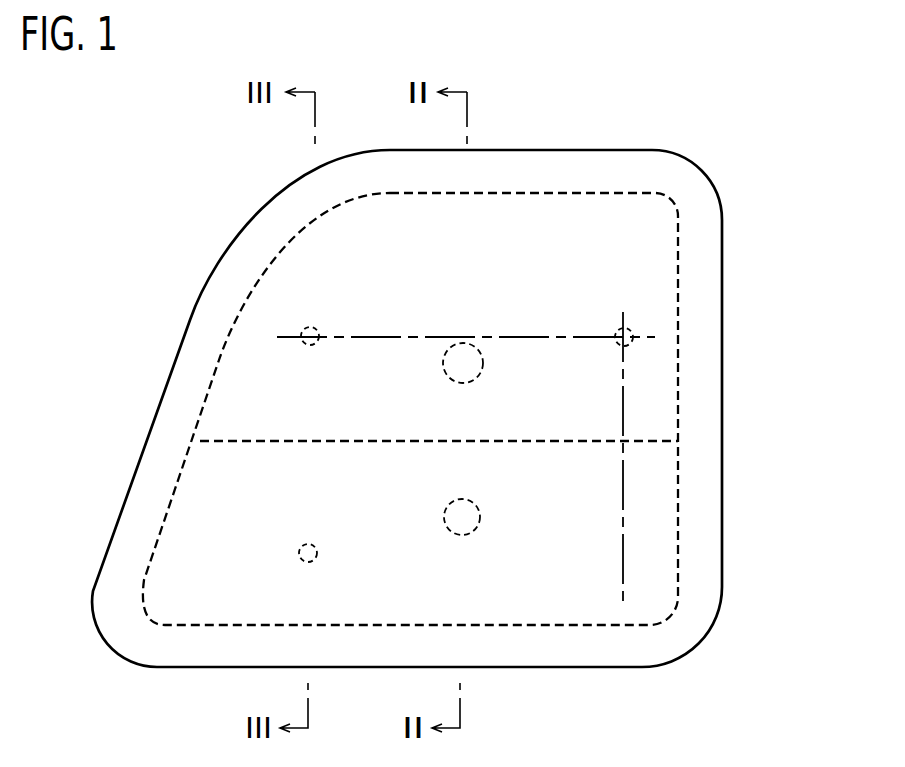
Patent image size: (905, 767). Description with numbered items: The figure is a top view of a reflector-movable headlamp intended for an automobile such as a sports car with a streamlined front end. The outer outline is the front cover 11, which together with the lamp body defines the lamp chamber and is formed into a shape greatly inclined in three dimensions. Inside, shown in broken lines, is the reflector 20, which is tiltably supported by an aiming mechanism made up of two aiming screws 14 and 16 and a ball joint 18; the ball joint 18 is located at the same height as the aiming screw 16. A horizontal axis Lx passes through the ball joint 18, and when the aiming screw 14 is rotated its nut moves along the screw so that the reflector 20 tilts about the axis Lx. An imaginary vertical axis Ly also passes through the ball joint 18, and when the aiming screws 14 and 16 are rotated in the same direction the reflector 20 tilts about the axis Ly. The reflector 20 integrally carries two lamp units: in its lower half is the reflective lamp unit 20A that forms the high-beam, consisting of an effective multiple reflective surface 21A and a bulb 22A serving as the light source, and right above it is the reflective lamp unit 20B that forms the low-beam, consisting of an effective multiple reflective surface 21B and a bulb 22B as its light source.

The front cover 11 is at (190, 385).
The aiming screw 14 is at (300, 562).
The aiming screw 16 is at (303, 328).
The ball joint 18 is at (635, 330).
The reflector 20 is at (676, 207).
The reflective lamp unit 20A is at (540, 570).
The reflective lamp unit 20B is at (573, 253).
The effective multiple reflective surface 21A is at (643, 575).
The effective multiple reflective surface 21B is at (630, 277).
The bulb 22A is at (480, 517).
The bulb 22B is at (483, 365).
The horizontal axis Lx is at (518, 337).
The imaginary vertical axis Ly is at (623, 472).